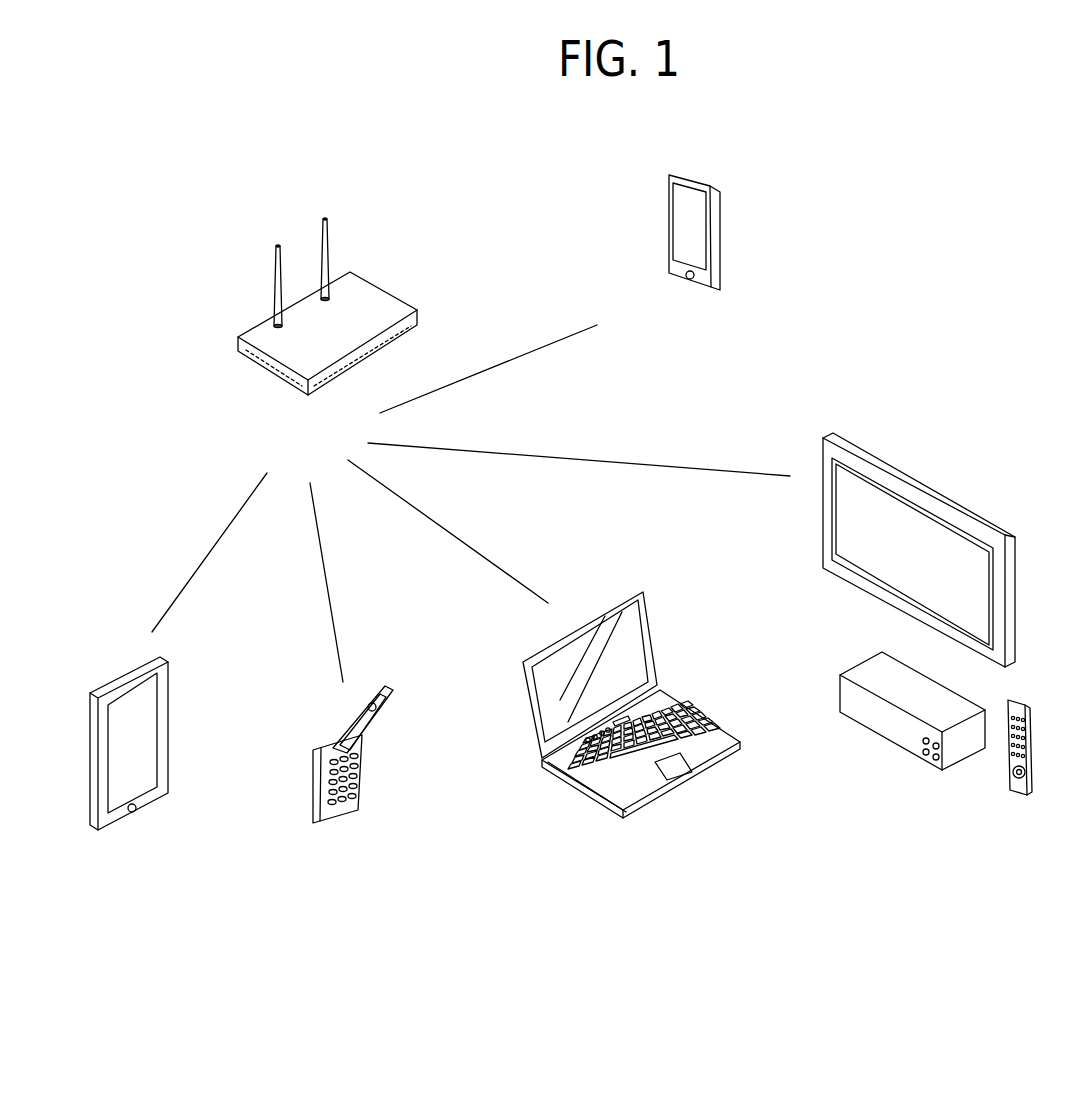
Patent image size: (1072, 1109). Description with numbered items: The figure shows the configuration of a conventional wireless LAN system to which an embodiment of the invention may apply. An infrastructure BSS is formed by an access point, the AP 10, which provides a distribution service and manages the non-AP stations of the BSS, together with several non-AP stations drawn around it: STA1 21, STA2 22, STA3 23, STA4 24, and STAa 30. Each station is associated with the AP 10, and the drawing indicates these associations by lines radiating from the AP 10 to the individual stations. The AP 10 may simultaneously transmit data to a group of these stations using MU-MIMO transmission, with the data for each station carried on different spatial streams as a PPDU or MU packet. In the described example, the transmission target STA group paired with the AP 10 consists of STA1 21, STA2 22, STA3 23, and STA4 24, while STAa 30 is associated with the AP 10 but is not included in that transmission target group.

The access point 10 is at (327, 349).
The non-AP STA1 21 is at (127, 781).
The non-AP STA2 22 is at (350, 795).
The non-AP STA3 23 is at (631, 738).
The non-AP STA4 24 is at (927, 639).
The non-AP STAa 30 is at (691, 270).